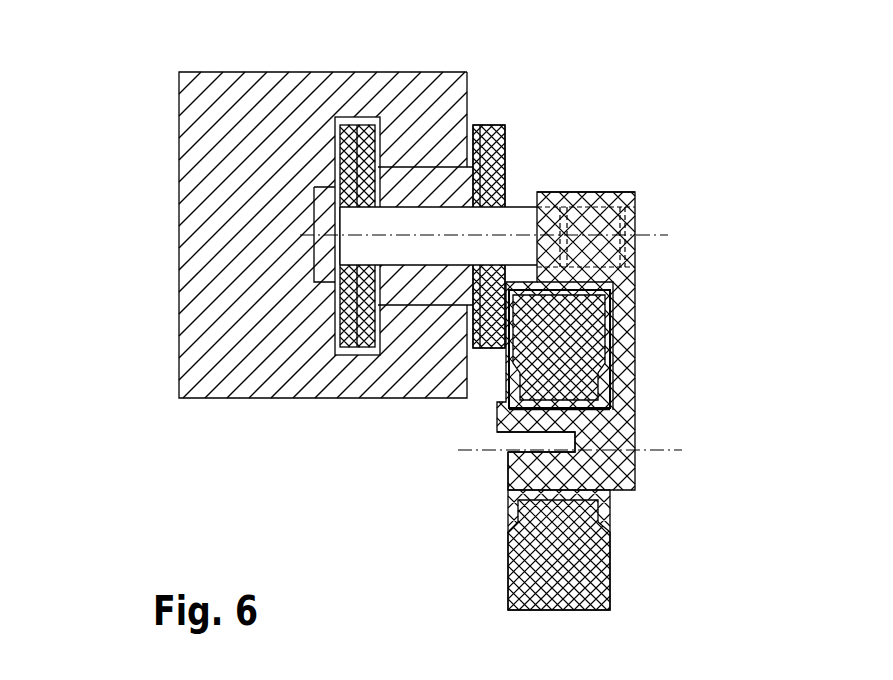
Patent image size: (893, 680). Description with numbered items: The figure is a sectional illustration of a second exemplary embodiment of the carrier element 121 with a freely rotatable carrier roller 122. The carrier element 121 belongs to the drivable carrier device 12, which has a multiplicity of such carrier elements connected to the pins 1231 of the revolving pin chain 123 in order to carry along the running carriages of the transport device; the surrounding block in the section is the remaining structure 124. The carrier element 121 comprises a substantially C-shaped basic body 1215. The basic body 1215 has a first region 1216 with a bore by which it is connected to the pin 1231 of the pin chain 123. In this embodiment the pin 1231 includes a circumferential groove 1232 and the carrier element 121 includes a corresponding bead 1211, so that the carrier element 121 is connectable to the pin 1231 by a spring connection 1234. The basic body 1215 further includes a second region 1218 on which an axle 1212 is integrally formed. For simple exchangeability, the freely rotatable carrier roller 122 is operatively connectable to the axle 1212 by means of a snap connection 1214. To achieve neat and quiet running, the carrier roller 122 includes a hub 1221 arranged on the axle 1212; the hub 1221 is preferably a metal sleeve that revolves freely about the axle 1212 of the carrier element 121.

The carrier device 12 is at (133, 72).
The base block 124 is at (233, 199).
The pin chain 123 is at (494, 106).
The pin 1231 is at (387, 233).
The carrier element 121 is at (538, 168).
The first region 1216 is at (553, 197).
The bead 1211 is at (575, 201).
The circumferential groove 1232 is at (637, 226).
The spring connection 1234 is at (622, 211).
The freely rotatable carrier roller 122 is at (637, 323).
The basic body 1215 is at (624, 355).
The hub 1221 is at (587, 405).
The snap connection 1214 is at (490, 453).
The second region 1218 is at (508, 477).
The axle 1212 is at (637, 476).